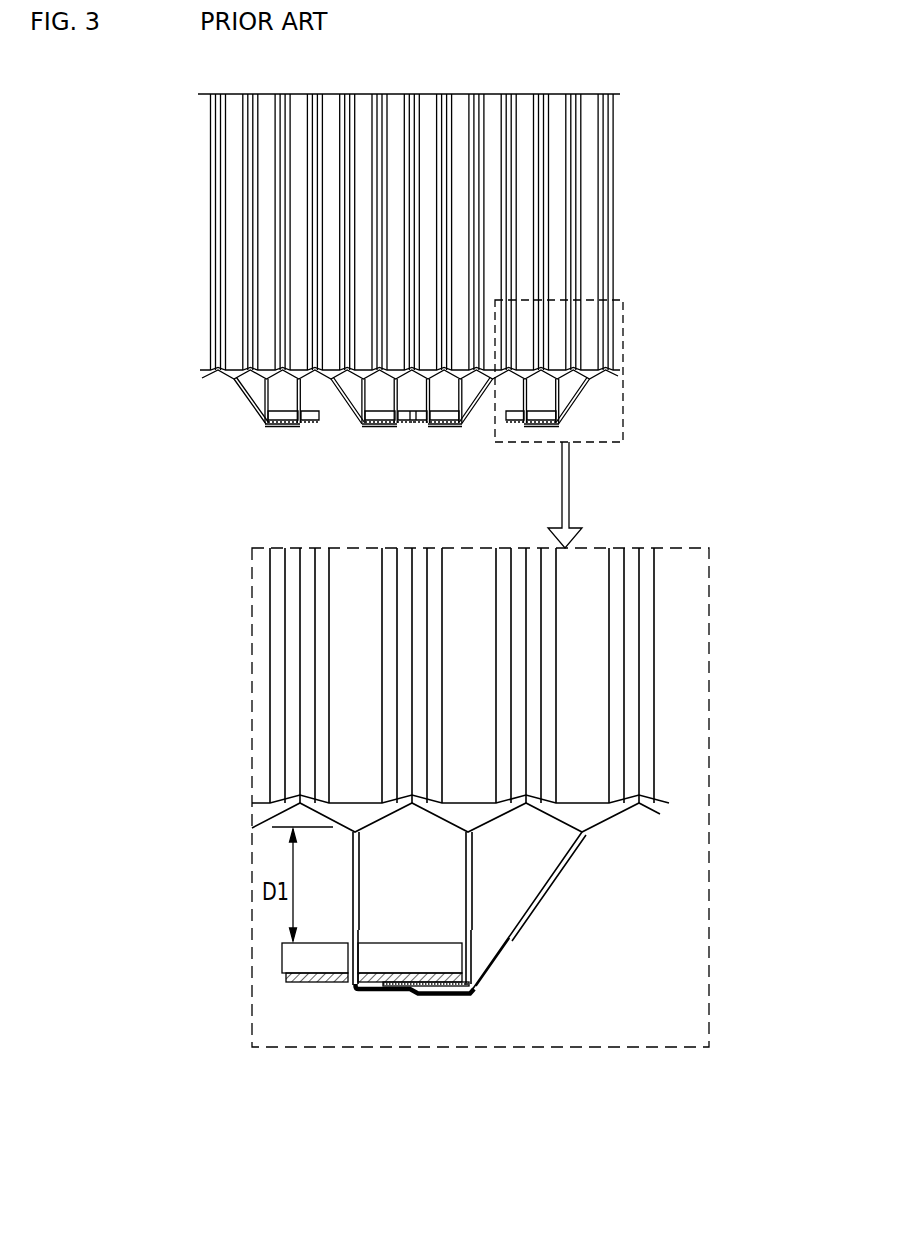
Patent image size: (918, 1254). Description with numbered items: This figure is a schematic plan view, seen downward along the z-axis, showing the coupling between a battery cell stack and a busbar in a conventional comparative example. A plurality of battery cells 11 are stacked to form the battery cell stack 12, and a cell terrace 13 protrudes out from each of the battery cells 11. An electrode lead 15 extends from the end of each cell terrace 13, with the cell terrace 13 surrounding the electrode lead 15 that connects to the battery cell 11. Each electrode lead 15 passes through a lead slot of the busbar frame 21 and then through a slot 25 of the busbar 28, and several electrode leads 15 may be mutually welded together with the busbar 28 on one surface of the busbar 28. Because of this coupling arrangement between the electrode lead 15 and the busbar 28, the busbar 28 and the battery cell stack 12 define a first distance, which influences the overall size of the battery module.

The battery cell 11 is at (596, 612).
The battery cell stack 12 is at (553, 176).
The cell terrace 13 is at (360, 858).
The electrode lead 15 is at (365, 990).
The busbar frame 21 is at (410, 944).
The slot 25 is at (359, 988).
The busbar 28 is at (392, 990).